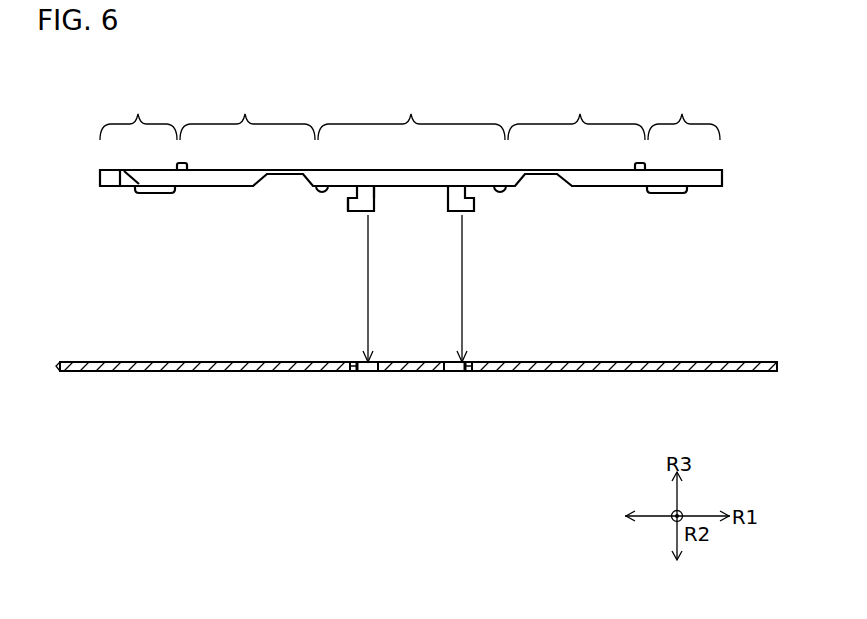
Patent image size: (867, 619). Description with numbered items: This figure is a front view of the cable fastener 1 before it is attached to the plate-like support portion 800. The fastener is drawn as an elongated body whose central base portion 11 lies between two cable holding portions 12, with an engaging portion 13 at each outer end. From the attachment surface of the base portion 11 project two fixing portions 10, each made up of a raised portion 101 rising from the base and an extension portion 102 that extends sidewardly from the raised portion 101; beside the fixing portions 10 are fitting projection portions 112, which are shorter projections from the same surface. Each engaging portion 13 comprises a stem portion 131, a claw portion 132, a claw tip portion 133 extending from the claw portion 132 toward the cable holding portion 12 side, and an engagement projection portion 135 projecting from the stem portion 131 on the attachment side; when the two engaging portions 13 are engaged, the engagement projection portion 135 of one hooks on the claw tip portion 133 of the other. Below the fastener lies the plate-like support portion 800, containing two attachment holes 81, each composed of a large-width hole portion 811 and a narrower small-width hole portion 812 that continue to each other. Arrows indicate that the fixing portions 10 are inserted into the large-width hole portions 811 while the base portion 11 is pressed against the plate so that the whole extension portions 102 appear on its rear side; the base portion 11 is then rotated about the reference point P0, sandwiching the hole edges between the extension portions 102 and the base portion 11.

The cable fastener 1 is at (729, 147).
The fixing portion 10 is at (351, 223).
The base portion 11 is at (411, 112).
The cable holding portion 12 is at (412, 112).
The engaging portion 13 is at (410, 112).
The raised portion 101 is at (378, 196).
The extension portion 102 is at (347, 206).
The fitting projection portion 112 is at (322, 193).
The stem portion 131 is at (150, 169).
The claw portion 132 is at (100, 178).
The claw tip portion 133 is at (126, 185).
The engagement projection portion 135 is at (158, 194).
The reference point P0 is at (413, 170).
The plate-like support portion 800 is at (205, 372).
The attachment hole 81 is at (365, 386).
The large-width hole portion 811 is at (352, 371).
The small-width hole portion 812 is at (359, 371).